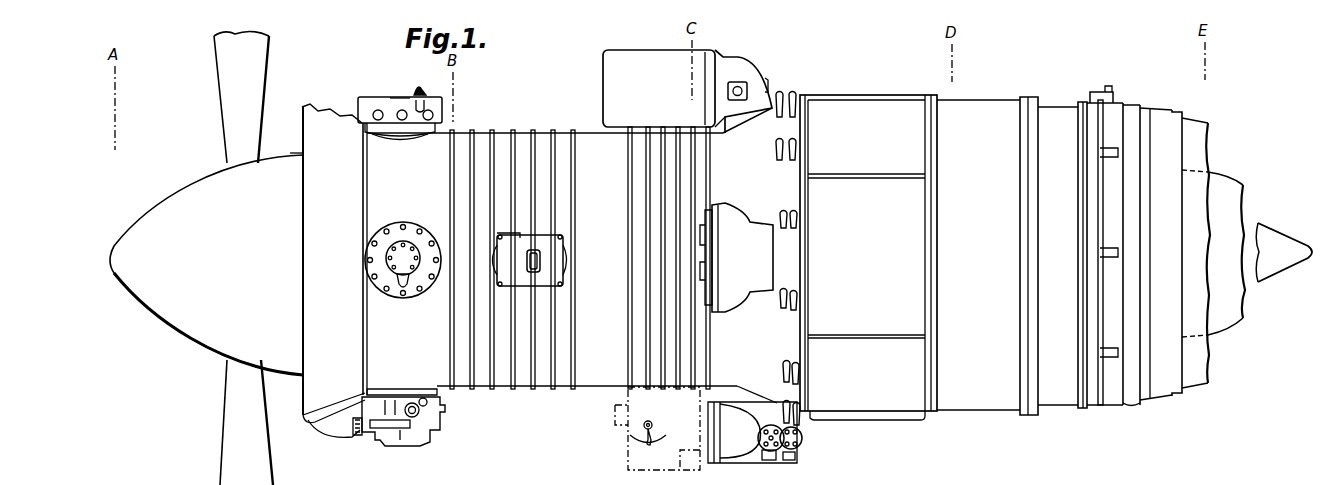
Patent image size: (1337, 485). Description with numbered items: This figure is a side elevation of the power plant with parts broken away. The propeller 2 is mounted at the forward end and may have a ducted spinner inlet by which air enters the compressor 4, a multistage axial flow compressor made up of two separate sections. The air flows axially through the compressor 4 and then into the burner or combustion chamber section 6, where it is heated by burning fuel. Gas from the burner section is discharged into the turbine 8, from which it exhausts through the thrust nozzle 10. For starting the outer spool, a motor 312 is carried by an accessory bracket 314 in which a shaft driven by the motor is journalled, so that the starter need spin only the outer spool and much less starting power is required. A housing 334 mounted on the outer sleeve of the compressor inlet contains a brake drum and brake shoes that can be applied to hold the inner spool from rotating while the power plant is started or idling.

The propeller 2 is at (231, 57).
The compressor 4 is at (552, 118).
The combustion chamber section 6 is at (877, 95).
The turbine 8 is at (1066, 92).
The thrust nozzle 10 is at (1216, 152).
The motor 312 is at (630, 60).
The accessory bracket 314 is at (756, 70).
The housing 334 is at (388, 110).